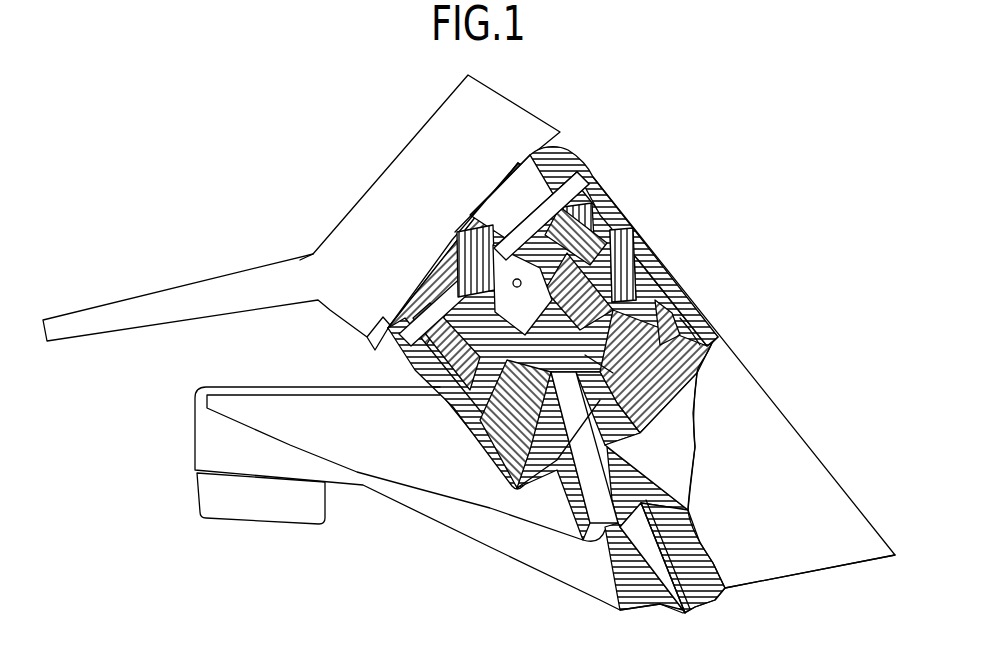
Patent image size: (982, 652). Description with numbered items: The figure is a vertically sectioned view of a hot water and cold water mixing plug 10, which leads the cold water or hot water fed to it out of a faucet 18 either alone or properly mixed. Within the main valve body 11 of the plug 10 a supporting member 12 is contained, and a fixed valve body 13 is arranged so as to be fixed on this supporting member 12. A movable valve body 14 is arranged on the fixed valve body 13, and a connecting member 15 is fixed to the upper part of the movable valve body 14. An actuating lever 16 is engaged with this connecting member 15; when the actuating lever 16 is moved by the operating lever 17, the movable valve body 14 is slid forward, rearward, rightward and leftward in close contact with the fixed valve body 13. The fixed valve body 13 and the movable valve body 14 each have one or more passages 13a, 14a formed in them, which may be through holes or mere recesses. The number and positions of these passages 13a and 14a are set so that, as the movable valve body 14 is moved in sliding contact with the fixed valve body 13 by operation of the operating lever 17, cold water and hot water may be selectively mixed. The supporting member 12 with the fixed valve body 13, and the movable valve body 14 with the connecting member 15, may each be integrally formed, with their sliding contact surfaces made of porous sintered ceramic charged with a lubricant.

The hot water and cold water mixing plug 10 is at (603, 157).
The main valve body 11 is at (405, 378).
The supporting member 12 is at (685, 327).
The fixed valve body 13 is at (672, 313).
The passage 13a is at (557, 420).
The movable valve body 14 is at (653, 280).
The passage 14a is at (613, 373).
The connecting member 15 is at (598, 247).
The actuating lever 16 is at (480, 242).
The operating lever 17 is at (138, 303).
The faucet 18 is at (200, 505).